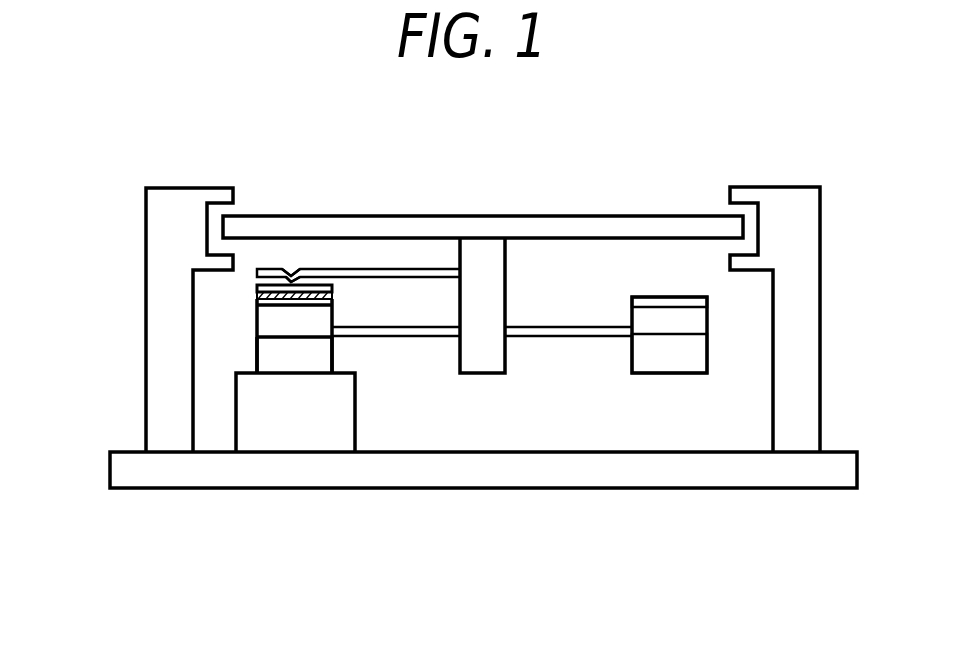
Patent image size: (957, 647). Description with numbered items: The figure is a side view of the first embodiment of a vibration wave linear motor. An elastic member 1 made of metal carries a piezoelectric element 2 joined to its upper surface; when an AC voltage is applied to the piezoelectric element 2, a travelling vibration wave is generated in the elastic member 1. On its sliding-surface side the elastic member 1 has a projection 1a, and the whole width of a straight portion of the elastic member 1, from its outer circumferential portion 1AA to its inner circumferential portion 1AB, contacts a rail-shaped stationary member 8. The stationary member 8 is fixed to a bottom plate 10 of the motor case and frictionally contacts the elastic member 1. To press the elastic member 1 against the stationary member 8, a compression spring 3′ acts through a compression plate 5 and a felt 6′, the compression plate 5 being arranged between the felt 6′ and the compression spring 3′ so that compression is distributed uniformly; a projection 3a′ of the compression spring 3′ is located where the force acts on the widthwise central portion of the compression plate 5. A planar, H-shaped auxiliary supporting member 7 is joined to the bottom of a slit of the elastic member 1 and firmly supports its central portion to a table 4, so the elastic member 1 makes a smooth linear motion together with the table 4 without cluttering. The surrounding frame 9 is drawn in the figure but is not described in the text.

The elastic member 1 is at (707, 320).
The projection 1a is at (683, 366).
The outer circumferential portion 1AA is at (257, 355).
The inner circumferential portion 1AB is at (337, 352).
The piezoelectric element 2 is at (658, 300).
The compression spring 3′ is at (405, 270).
The projection of the compression spring 3a′ is at (292, 272).
The table 4 is at (553, 226).
The compression plate 5 is at (257, 290).
The felt 6′ is at (257, 298).
The auxiliary supporting member 7 is at (430, 336).
The stationary member 8 is at (307, 438).
The frame 9 is at (810, 250).
The bottom plate 10 is at (800, 478).